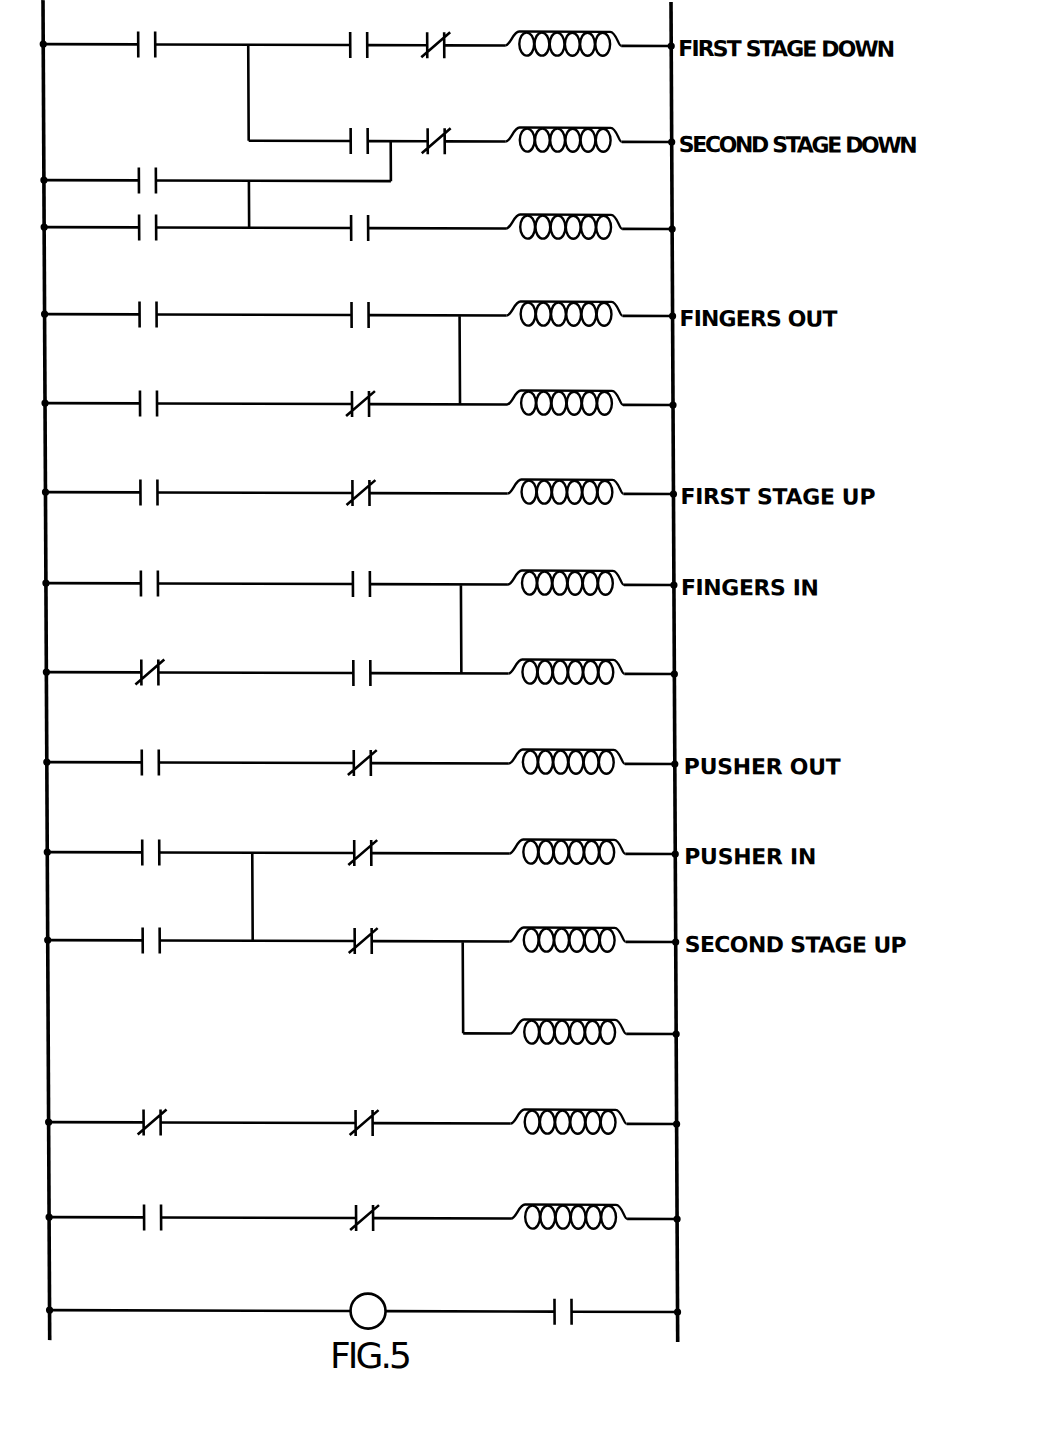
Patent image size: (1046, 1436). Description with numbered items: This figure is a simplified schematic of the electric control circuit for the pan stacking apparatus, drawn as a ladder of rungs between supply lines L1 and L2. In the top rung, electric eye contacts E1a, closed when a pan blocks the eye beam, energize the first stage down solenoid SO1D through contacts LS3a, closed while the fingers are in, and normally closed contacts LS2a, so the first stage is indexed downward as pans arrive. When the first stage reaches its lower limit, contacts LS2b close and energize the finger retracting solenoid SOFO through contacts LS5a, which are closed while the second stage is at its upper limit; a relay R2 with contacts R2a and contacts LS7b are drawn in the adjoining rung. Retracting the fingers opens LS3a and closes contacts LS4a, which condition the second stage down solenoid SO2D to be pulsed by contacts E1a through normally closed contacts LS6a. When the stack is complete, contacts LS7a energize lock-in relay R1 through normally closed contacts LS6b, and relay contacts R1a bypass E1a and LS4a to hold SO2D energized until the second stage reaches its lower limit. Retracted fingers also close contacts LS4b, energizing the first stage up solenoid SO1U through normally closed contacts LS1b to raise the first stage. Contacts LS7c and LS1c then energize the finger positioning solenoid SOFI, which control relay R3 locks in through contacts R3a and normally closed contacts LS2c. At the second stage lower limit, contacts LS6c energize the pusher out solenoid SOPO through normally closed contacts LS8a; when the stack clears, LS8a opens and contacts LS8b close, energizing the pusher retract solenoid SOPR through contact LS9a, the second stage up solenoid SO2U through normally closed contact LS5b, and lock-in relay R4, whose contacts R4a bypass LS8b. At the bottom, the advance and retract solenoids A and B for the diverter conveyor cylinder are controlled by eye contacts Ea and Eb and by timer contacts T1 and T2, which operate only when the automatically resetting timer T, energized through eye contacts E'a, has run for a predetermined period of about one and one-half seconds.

The supply line L1 is at (47, 15).
The supply line L2 is at (671, 18).
The electric eye contacts E1a is at (146, 57).
The limit switch contacts LS3a is at (358, 59).
The normally closed limit switch contacts LS2a is at (434, 60).
The first stage down solenoid SO1D is at (573, 60).
The limit switch contacts LS4a is at (358, 127).
The normally closed limit switch contacts LS6a is at (433, 158).
The second stage down solenoid SO2D is at (570, 147).
The relay contacts R1a is at (138, 194).
The limit switch contacts LS7a is at (147, 241).
The normally closed limit switch contacts LS6b is at (357, 241).
The lock-in relay R1 is at (568, 237).
The limit switch contacts LS2b is at (147, 328).
The limit switch contacts LS5a is at (357, 328).
The finger retracting solenoid SOFO is at (568, 324).
The relay contact R2a is at (143, 417).
The limit switch contact LS7b is at (357, 417).
The relay R2 is at (568, 414).
The limit switch contacts LS4b is at (143, 507).
The normally closed limit switch contacts LS1b is at (357, 507).
The first stage up solenoid SO1U is at (568, 507).
The limit switch contacts LS1c is at (147, 597).
The limit switch contacts LS7c is at (357, 594).
The finger positioning solenoid SOFI is at (568, 593).
The normally closed limit switch contacts LS2c is at (150, 689).
The relay contacts R3a is at (357, 685).
The control relay R3 is at (568, 683).
The limit switch contacts LS6c is at (150, 779).
The normally closed limit switch contacts LS8a is at (357, 777).
The pusher out actuating solenoid SOPO is at (568, 774).
The limit switch contacts LS8b is at (143, 867).
The limit switch contact LS9a is at (357, 867).
The pusher retract solenoid SOPR is at (568, 864).
The lock-in contacts R4a is at (143, 957).
The normally closed limit switch contact LS5b is at (357, 957).
The second stage up solenoid SO2U is at (568, 954).
The lock-in relay R4 is at (565, 1045).
The timer contacts T1 is at (143, 1107).
The eye contacts Ea is at (357, 1108).
The advance solenoid A is at (583, 1112).
The timer contacts T2 is at (144, 1212).
The eye contacts Eb is at (357, 1212).
The retract solenoid B is at (578, 1204).
The timer T is at (367, 1311).
The eye contacts E'a is at (578, 1291).